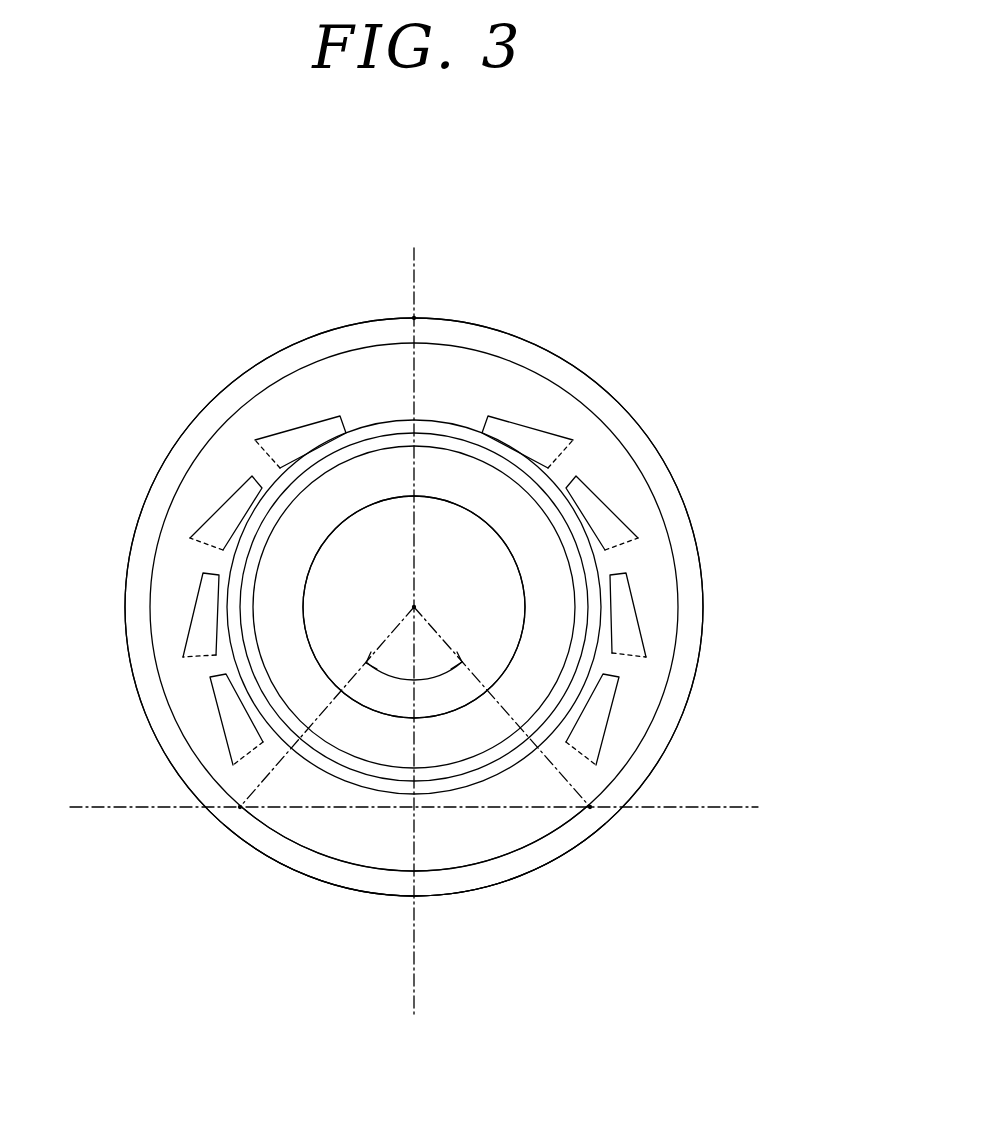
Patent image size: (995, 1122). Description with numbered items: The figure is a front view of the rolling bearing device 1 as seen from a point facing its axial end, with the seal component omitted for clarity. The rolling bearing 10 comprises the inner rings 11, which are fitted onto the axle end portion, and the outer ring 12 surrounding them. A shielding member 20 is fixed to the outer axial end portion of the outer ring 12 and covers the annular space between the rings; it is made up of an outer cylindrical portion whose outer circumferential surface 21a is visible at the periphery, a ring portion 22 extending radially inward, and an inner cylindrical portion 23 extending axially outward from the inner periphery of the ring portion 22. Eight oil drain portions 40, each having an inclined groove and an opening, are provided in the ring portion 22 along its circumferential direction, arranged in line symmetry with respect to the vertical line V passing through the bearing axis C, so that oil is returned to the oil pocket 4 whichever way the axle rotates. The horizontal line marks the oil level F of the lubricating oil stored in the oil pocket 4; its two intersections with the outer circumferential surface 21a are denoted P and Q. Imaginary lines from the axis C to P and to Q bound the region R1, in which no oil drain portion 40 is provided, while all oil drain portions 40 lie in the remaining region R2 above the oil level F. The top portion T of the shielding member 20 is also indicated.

The bearing device 1 is at (220, 337).
The oil pocket 4 is at (134, 874).
The rolling bearing 10 is at (437, 501).
The inner rings 11 is at (333, 529).
The outer ring 12 is at (127, 581).
The shielding member 20 is at (217, 428).
The outer circumferential surface 21a is at (290, 843).
The ring portion 22 is at (188, 546).
The inner cylindrical portion 23 is at (277, 490).
The oil drain portions 40 is at (538, 428).
The axis C is at (416, 606).
The vertical line V is at (413, 616).
The oil level F is at (116, 803).
The top portion T is at (415, 318).
The intersection P is at (240, 809).
The intersection Q is at (590, 809).
The region R1 is at (358, 848).
The region R2 is at (347, 372).